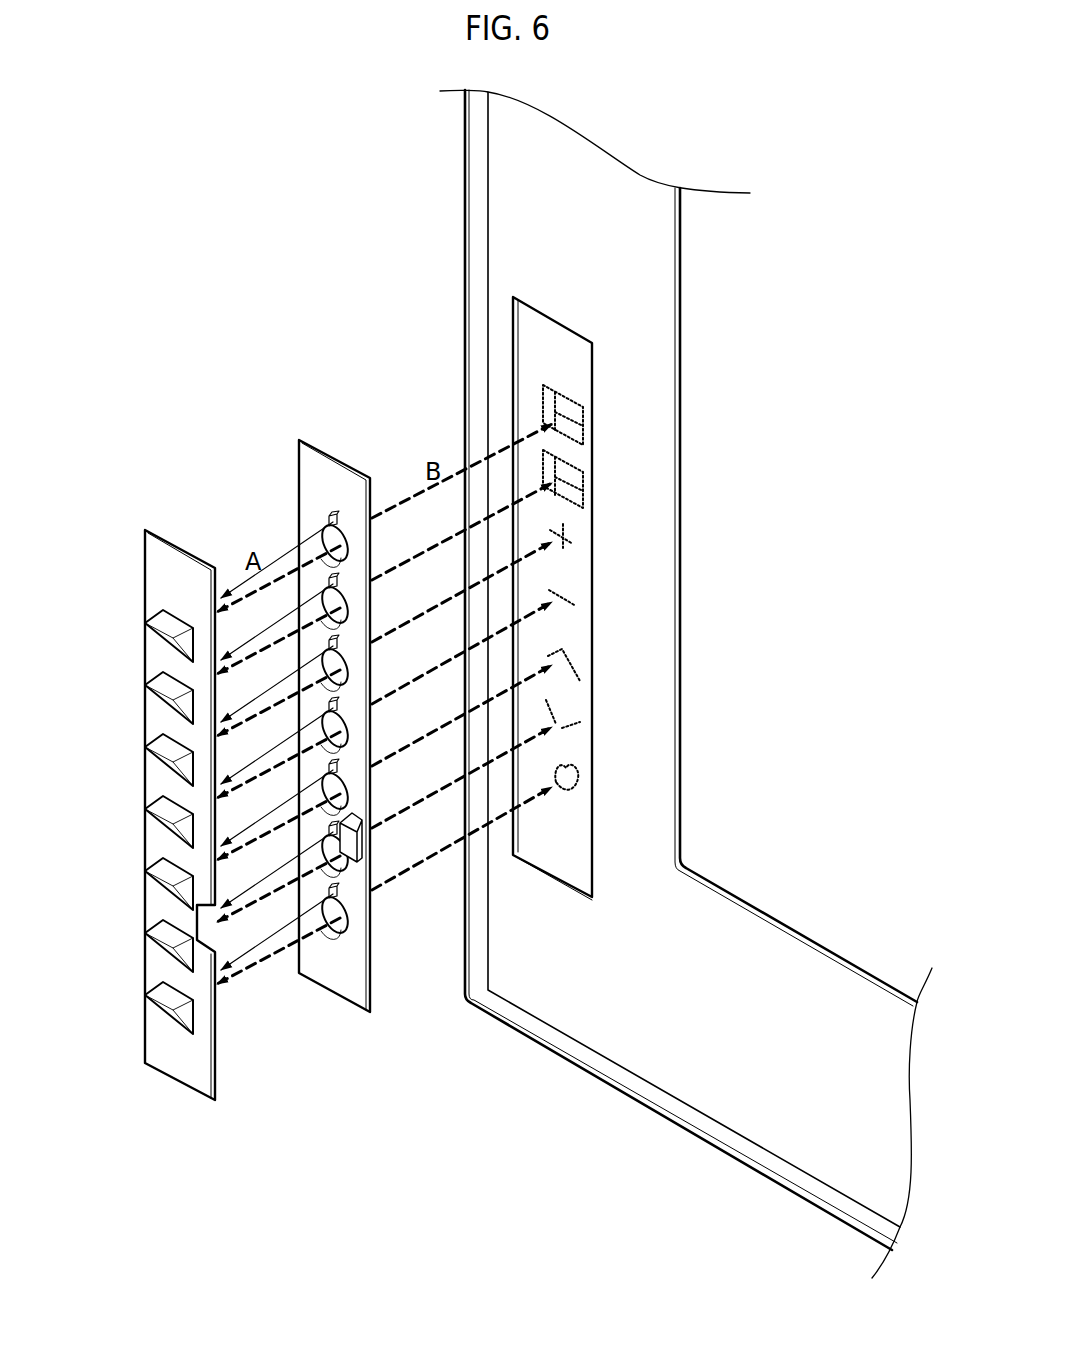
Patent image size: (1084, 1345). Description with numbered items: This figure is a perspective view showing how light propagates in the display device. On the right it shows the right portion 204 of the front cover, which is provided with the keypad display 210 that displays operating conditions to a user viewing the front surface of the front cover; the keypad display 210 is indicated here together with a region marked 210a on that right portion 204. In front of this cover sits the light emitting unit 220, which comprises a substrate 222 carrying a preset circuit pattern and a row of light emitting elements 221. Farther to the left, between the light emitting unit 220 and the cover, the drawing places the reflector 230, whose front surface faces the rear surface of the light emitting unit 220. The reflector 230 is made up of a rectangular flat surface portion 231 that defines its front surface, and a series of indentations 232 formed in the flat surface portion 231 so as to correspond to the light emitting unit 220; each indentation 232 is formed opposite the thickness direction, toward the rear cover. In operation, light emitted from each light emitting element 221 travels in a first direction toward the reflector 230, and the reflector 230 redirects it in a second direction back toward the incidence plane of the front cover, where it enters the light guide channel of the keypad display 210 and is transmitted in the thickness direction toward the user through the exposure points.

The keypad display 210 is at (625, 684).
The right portion 204 is at (538, 242).
The display region of door panel 210a is at (538, 402).
The light emitting unit 220 is at (366, 767).
The light emitting element 221 is at (340, 898).
The substrate 222 is at (353, 958).
The reflector 230 is at (148, 854).
The flat surface portion 231 is at (165, 1052).
The indentation 232 is at (165, 1003).